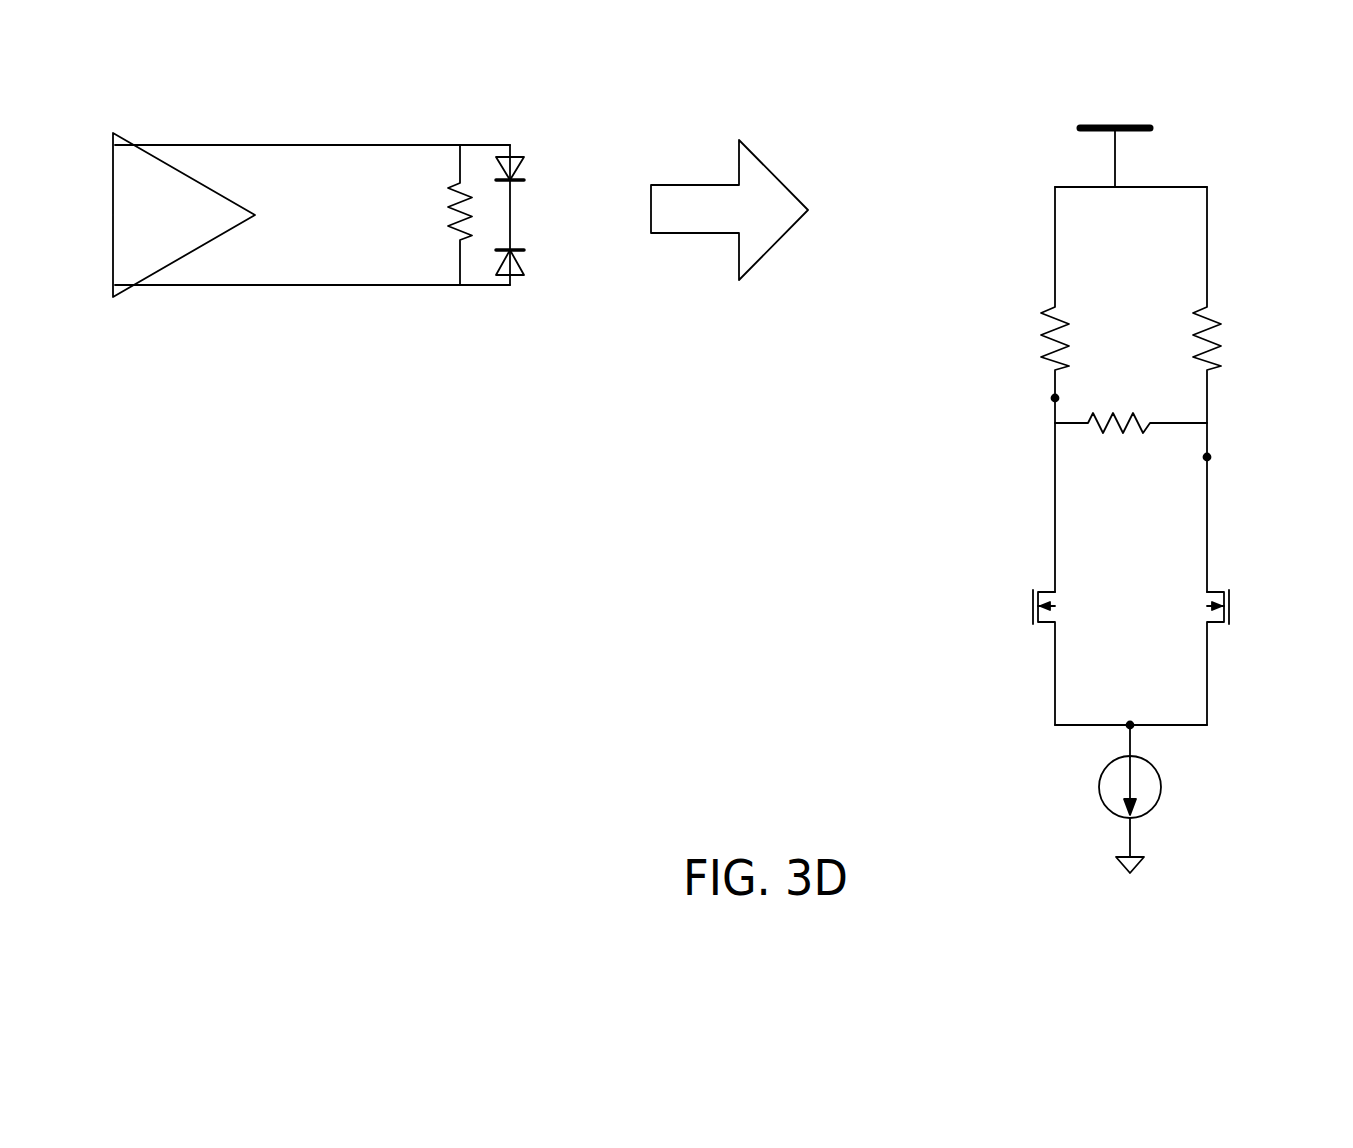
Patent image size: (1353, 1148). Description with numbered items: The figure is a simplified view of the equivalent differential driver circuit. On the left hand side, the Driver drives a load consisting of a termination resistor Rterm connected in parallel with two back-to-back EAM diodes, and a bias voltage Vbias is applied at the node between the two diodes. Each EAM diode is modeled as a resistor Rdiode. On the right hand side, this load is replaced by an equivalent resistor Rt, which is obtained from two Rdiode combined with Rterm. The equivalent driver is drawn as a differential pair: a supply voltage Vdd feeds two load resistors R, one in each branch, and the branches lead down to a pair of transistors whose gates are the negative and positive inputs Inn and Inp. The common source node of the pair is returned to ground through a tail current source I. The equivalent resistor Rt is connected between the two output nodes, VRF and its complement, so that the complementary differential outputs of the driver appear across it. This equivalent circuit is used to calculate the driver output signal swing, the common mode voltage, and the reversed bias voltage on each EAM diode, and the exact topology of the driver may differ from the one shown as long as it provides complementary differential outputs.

The driver Driver is at (184, 215).
The element Rterm is at (412, 215).
The element Vbias is at (510, 215).
The element Vdd is at (1115, 128).
The element R is at (1127, 389).
The element Rt is at (979, 461).
The element VRF is at (1012, 419).
The element Inn is at (1033, 620).
The element Inp is at (1229, 620).
The element I is at (1146, 798).